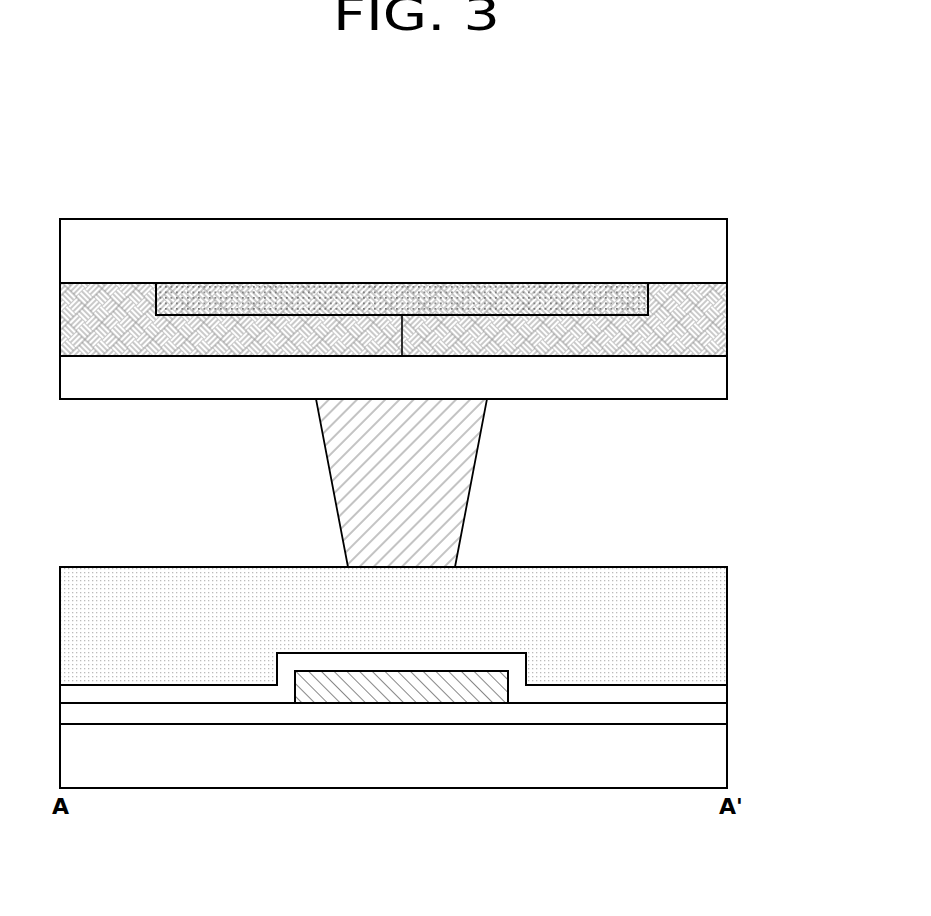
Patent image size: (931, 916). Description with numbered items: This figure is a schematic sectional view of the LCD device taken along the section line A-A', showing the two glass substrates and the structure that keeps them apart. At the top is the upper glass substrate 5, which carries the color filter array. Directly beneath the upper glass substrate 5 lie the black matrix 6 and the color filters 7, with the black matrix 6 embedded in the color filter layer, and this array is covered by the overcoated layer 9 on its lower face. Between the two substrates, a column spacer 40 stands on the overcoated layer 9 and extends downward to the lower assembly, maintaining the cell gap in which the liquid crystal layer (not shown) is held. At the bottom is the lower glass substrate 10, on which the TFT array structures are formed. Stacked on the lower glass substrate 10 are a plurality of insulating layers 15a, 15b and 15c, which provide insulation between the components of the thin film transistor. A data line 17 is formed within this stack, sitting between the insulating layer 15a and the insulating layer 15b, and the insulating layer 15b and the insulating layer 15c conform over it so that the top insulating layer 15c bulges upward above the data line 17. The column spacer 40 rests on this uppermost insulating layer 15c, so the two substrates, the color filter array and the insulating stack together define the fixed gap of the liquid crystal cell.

The upper glass substrate 5 is at (720, 250).
The black matrix 6 is at (390, 292).
The color filters 7 is at (720, 322).
The overcoated layer 9 is at (720, 376).
The column spacer 40 is at (463, 470).
The insulating layer 15c is at (720, 626).
The insulating layer 15b is at (720, 697).
The insulating layer 15a is at (720, 718).
The lower glass substrate 10 is at (720, 758).
The data line 17 is at (394, 695).